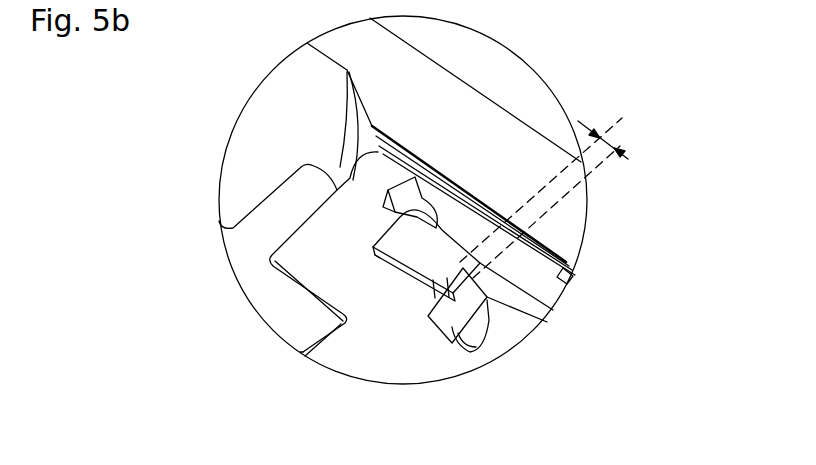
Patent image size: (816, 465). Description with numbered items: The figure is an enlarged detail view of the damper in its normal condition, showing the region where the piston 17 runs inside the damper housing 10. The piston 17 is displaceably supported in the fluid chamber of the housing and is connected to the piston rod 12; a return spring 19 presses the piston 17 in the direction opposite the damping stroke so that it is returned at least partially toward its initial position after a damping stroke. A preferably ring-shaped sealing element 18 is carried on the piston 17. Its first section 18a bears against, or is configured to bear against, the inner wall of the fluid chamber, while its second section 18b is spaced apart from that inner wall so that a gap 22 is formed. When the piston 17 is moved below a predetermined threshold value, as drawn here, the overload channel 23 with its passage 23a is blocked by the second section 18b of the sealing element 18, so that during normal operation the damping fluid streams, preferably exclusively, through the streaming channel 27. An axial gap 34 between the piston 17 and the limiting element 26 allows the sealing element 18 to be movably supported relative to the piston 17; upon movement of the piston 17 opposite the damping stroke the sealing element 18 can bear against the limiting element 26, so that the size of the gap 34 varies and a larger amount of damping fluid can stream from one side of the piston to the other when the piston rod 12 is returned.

The damper housing 10 is at (333, 42).
The piston rod 12 is at (258, 278).
The piston 17 is at (353, 348).
The sealing element 18 is at (562, 297).
The first section 18a is at (533, 275).
The second section 18b is at (415, 242).
The return spring 19 is at (478, 319).
The gap 22 is at (450, 210).
The overload channel 23 is at (417, 195).
The passage 23a is at (357, 171).
The limiting element 26 is at (453, 315).
The streaming channel 27 is at (404, 146).
The axial gap 34 is at (558, 186).